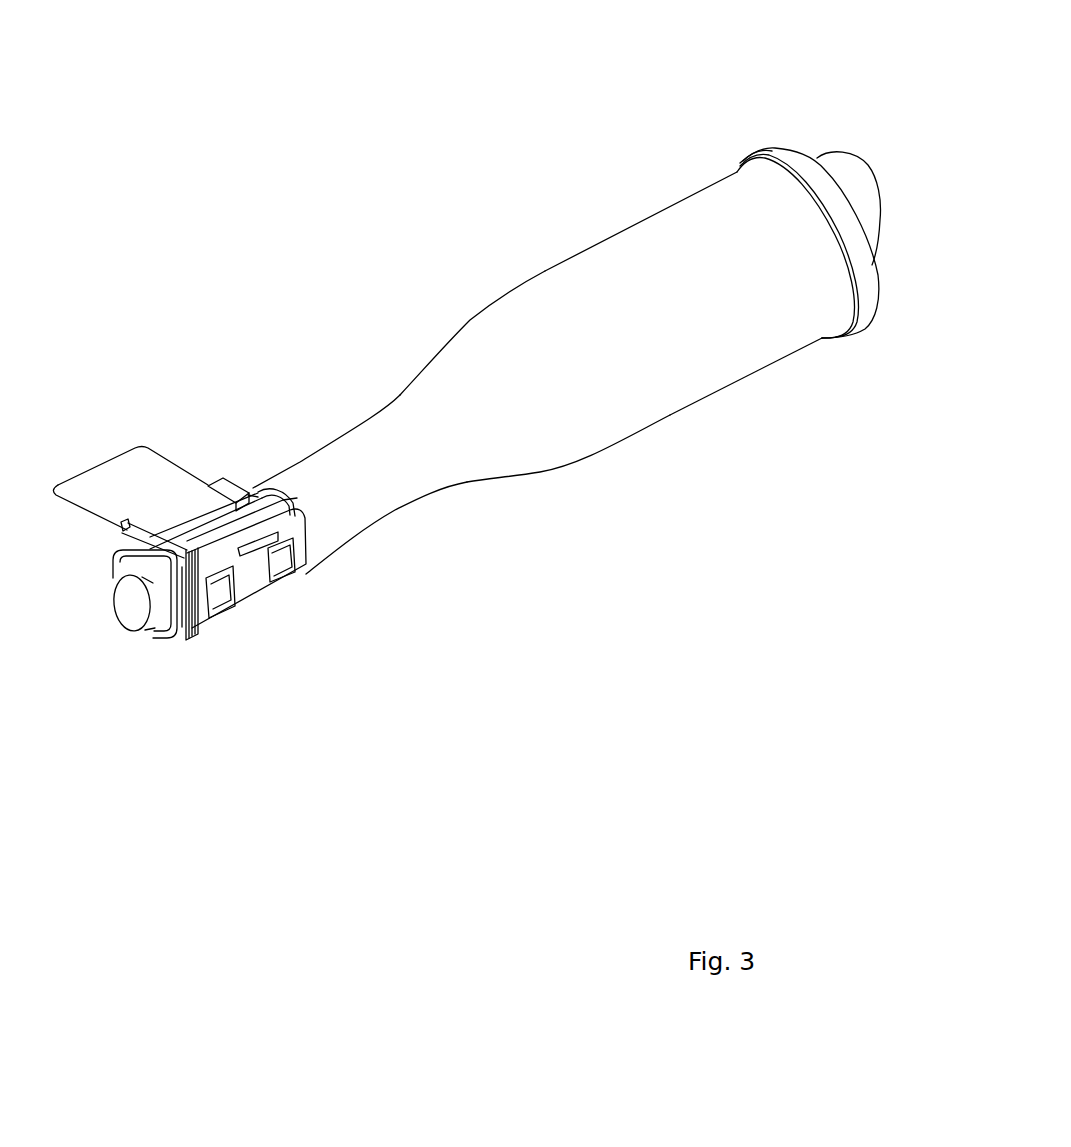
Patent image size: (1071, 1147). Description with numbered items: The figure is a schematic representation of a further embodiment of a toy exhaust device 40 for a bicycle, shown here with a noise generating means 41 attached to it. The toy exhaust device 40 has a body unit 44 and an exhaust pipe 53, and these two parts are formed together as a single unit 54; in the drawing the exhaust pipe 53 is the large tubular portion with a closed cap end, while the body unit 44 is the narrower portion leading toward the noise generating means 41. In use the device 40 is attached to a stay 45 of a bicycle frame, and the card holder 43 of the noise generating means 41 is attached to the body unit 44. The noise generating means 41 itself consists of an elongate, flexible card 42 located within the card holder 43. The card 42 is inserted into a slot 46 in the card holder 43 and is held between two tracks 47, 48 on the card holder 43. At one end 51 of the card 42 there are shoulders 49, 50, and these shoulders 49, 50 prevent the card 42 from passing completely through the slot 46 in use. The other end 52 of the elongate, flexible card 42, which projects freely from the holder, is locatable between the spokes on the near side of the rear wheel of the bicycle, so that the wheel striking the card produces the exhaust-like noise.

The toy exhaust device 40 is at (635, 152).
The noise generating means 41 is at (257, 347).
The elongate, flexible card 42 is at (157, 490).
The card holder 43 is at (252, 582).
The body unit 44 is at (380, 482).
The stay 45 is at (115, 592).
The slot 46 is at (290, 507).
The track 47 is at (127, 528).
The track 48 is at (240, 487).
The shoulder 49 is at (197, 560).
The shoulder 50 is at (297, 500).
The one end 51 is at (233, 573).
The other end 52 is at (72, 477).
The exhaust pipe 53 is at (584, 304).
The single unit 54 is at (413, 445).